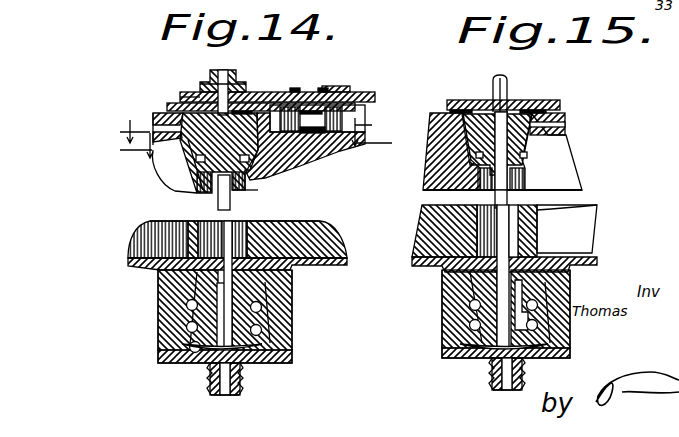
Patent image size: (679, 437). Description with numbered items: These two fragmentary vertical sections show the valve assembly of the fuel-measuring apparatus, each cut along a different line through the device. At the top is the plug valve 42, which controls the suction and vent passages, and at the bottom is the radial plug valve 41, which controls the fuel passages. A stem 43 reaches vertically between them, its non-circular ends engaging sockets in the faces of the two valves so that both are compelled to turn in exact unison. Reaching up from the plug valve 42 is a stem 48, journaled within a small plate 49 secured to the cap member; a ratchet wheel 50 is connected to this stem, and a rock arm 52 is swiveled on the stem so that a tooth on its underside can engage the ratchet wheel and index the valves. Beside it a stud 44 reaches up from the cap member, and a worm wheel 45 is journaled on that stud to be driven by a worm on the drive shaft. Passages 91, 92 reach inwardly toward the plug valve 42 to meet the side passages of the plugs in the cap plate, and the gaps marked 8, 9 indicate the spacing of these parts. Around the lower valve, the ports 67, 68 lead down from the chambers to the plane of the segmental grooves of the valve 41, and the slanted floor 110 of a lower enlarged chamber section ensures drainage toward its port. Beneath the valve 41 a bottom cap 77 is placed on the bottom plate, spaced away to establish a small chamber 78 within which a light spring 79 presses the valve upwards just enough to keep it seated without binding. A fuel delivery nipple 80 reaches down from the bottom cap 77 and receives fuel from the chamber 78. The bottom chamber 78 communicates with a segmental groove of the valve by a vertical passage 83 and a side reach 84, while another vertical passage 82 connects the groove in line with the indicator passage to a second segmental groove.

In FIG. 14, the gap dimension 8 is at (245, 129).
In FIG. 14, the gap dimension 9 is at (262, 148).
In FIG. 14, the radial plug valve 41 is at (194, 326).
In FIG. 15, the radial plug valve 41 is at (480, 321).
In FIG. 14, the plug valve 42 is at (211, 150).
In FIG. 15, the plug valve 42 is at (507, 148).
In FIG. 14, the stem 43 is at (232, 196).
In FIG. 15, the stem 43 is at (510, 204).
In FIG. 14, the stud 44 is at (343, 108).
In FIG. 14, the worm wheel 45 is at (342, 88).
In FIG. 14, the stem 48 is at (212, 76).
In FIG. 15, the stem 48 is at (506, 80).
In FIG. 14, the small plate 49 is at (180, 98).
In FIG. 15, the small plate 49 is at (524, 105).
In FIG. 14, the ratchet wheel 50 is at (202, 88).
In FIG. 14, the rock arm 52 is at (250, 92).
In FIG. 15, the port 67 is at (575, 275).
In FIG. 14, the port 68 is at (158, 283).
In FIG. 14, the bottom cap 77 is at (270, 364).
In FIG. 15, the bottom cap 77 is at (572, 360).
In FIG. 14, the chamber 78 is at (264, 347).
In FIG. 15, the chamber 78 is at (470, 345).
In FIG. 14, the light spring 79 is at (185, 364).
In FIG. 15, the light spring 79 is at (462, 356).
In FIG. 14, the fuel delivery nipple 80 is at (213, 381).
In FIG. 15, the fuel delivery nipple 80 is at (496, 378).
In FIG. 15, the vertical passage 82 is at (535, 298).
In FIG. 14, the vertical passage 83 is at (232, 317).
In FIG. 15, the vertical passage 83 is at (500, 300).
In FIG. 14, the side reach 84 is at (217, 290).
In FIG. 15, the passage 91 is at (552, 128).
In FIG. 14, the passage 92 is at (167, 108).
In FIG. 14, the floor 110 is at (142, 258).
In FIG. 15, the floor 110 is at (575, 262).